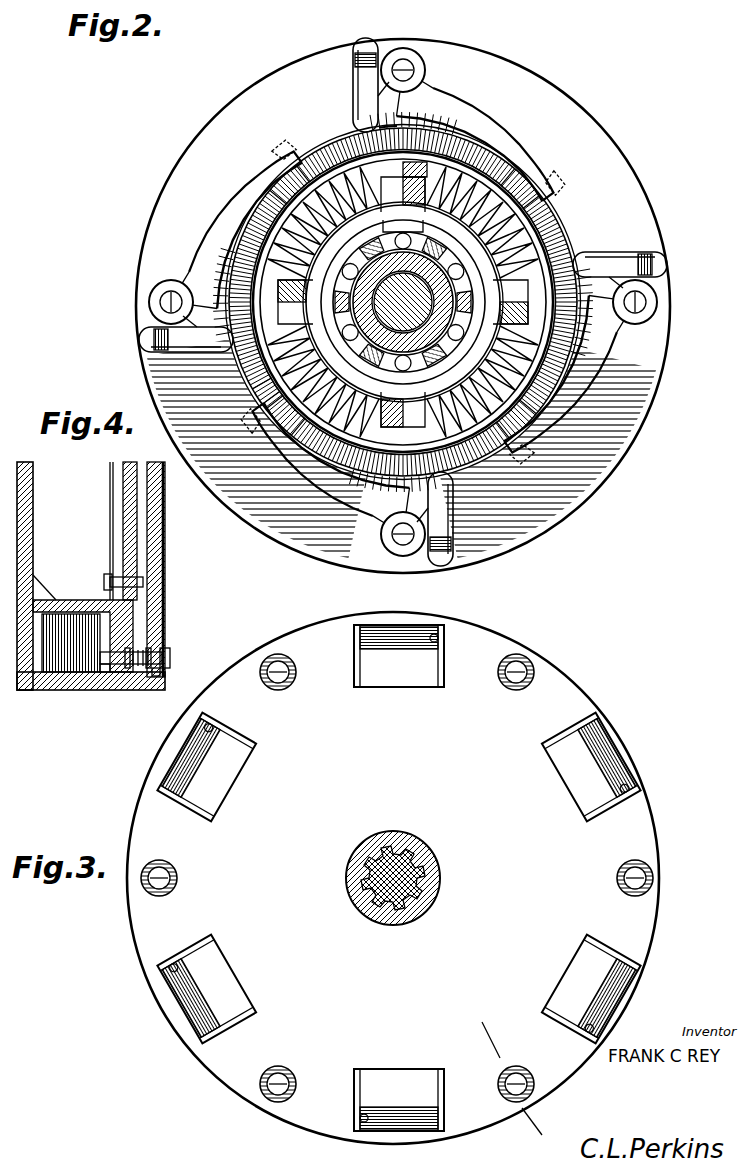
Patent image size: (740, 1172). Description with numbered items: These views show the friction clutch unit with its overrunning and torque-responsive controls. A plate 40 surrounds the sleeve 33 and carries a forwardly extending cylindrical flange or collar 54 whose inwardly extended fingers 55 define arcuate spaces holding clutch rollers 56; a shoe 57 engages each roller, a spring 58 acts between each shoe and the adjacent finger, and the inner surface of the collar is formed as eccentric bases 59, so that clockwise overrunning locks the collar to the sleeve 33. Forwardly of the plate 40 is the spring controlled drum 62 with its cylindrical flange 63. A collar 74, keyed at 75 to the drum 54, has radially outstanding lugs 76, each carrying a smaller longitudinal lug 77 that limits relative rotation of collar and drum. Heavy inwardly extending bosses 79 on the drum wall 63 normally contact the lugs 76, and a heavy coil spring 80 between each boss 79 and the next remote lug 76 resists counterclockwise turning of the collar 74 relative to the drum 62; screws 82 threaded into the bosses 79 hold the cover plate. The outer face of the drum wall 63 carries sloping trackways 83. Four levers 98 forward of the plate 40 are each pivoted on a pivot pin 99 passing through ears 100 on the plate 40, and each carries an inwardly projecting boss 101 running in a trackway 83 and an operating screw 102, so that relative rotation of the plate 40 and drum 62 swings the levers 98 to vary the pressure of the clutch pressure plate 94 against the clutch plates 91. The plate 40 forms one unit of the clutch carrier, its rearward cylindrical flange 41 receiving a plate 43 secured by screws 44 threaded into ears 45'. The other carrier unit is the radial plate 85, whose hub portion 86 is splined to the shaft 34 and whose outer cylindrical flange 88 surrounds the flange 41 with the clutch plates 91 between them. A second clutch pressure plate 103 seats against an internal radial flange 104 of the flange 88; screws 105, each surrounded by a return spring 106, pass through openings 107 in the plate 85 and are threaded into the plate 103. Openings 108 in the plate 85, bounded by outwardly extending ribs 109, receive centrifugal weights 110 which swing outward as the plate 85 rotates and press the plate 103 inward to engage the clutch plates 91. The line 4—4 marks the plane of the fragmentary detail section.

In FIG. 2, the plate 40 is at (604, 459).
In FIG. 4, the plate 40 is at (33, 528).
In FIG. 2, the shaft 34 is at (406, 295).
In FIG. 3, the shaft 34 is at (400, 846).
In FIG. 2, the sleeve 33 is at (403, 305).
In FIG. 2, the fingers 55 is at (403, 302).
In FIG. 2, the cylindrical flange 54 is at (299, 299).
In FIG. 2, the clutch rollers 56 is at (504, 307).
In FIG. 2, the shoe 57 is at (447, 353).
In FIG. 2, the spring 58 is at (419, 370).
In FIG. 2, the eccentric bases 59 is at (406, 194).
In FIG. 2, the spring controlled drum 62 is at (403, 294).
In FIG. 2, the cylindrical flange 63 is at (396, 302).
In FIG. 2, the key 75 is at (358, 302).
In FIG. 2, the lugs 76 is at (403, 302).
In FIG. 2, the longitudinally extending lug 77 is at (397, 124).
In FIG. 2, the bosses 79 is at (394, 302).
In FIG. 2, the coil spring 80 is at (403, 302).
In FIG. 2, the screws 82 is at (403, 301).
In FIG. 2, the trackways 83 is at (429, 296).
In FIG. 2, the collar 74 is at (237, 405).
In FIG. 2, the levers 98 is at (405, 294).
In FIG. 2, the pivot pin 99 is at (394, 302).
In FIG. 2, the ears 100 is at (425, 302).
In FIG. 2, the boss 101 is at (383, 298).
In FIG. 2, the operating screw 102 is at (406, 298).
In FIG. 4, the plate 43 is at (128, 508).
In FIG. 4, the ears 45' is at (91, 531).
In FIG. 4, the screws 44 is at (145, 583).
In FIG. 4, the cylindrical flange 41 is at (79, 600).
In FIG. 4, the radial plate 85 is at (164, 548).
In FIG. 3, the radial plate 85 is at (393, 878).
In FIG. 4, the internal radial flange 104 is at (124, 640).
In FIG. 4, the screws 105 is at (166, 652).
In FIG. 3, the screws 105 is at (525, 655).
In FIG. 4, the spring 106 is at (142, 690).
In FIG. 4, the openings 107 is at (160, 676).
In FIG. 3, the openings 107 is at (535, 668).
In FIG. 4, the clutch pressure plate 103 is at (108, 690).
In FIG. 4, the clutch pressure plate 94 is at (33, 690).
In FIG. 4, the outer cylindrical flange 88 is at (64, 690).
In FIG. 4, the clutch plates 91 is at (78, 690).
In FIG. 3, the hub portion 86 is at (373, 846).
In FIG. 3, the openings 108 is at (399, 878).
In FIG. 3, the ribs 109 is at (398, 878).
In FIG. 3, the centrifugal weight 110 is at (398, 878).
In FIG. 3, the section line 4- 4 is at (505, 1079).